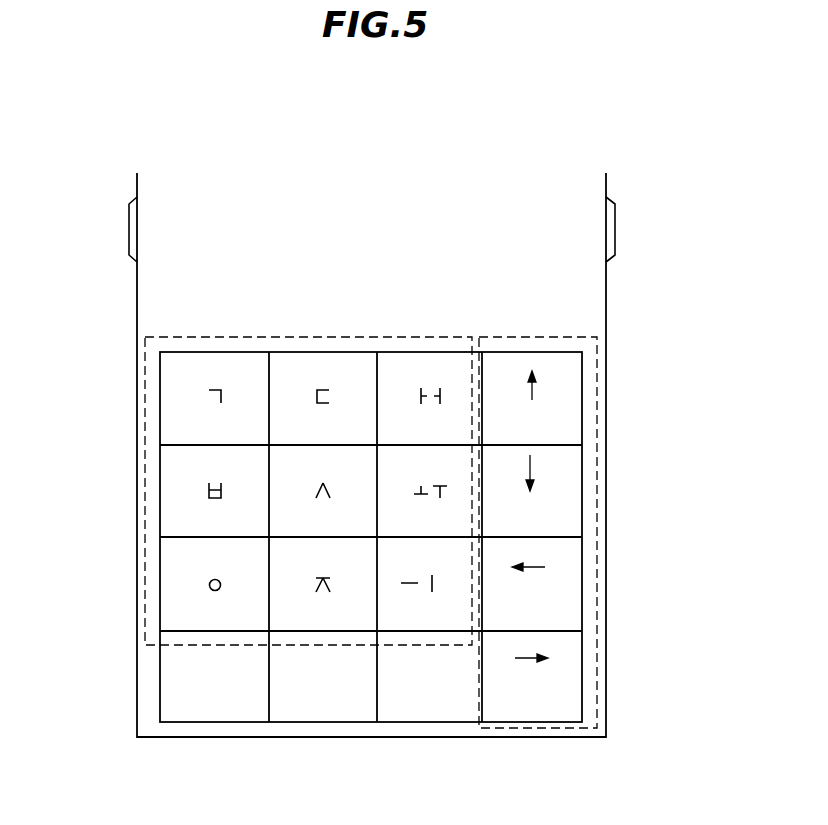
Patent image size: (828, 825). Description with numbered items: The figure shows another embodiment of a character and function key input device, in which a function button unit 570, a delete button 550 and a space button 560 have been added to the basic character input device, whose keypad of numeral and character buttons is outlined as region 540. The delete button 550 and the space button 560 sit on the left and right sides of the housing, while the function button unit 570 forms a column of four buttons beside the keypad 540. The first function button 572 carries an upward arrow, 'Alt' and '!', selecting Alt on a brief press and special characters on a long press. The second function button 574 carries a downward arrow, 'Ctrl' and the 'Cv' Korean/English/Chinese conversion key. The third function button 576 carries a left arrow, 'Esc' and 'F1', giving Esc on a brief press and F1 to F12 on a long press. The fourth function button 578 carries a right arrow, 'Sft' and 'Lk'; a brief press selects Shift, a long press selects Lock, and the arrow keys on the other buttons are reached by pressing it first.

The numeric keypad region 540 is at (145, 430).
The delete button 550 is at (128, 228).
The space button 560 is at (616, 227).
The function button unit 570 is at (579, 532).
The first function button 572 is at (582, 393).
The second function button 574 is at (582, 500).
The third function button 576 is at (582, 592).
The fourth function button 578 is at (582, 674).